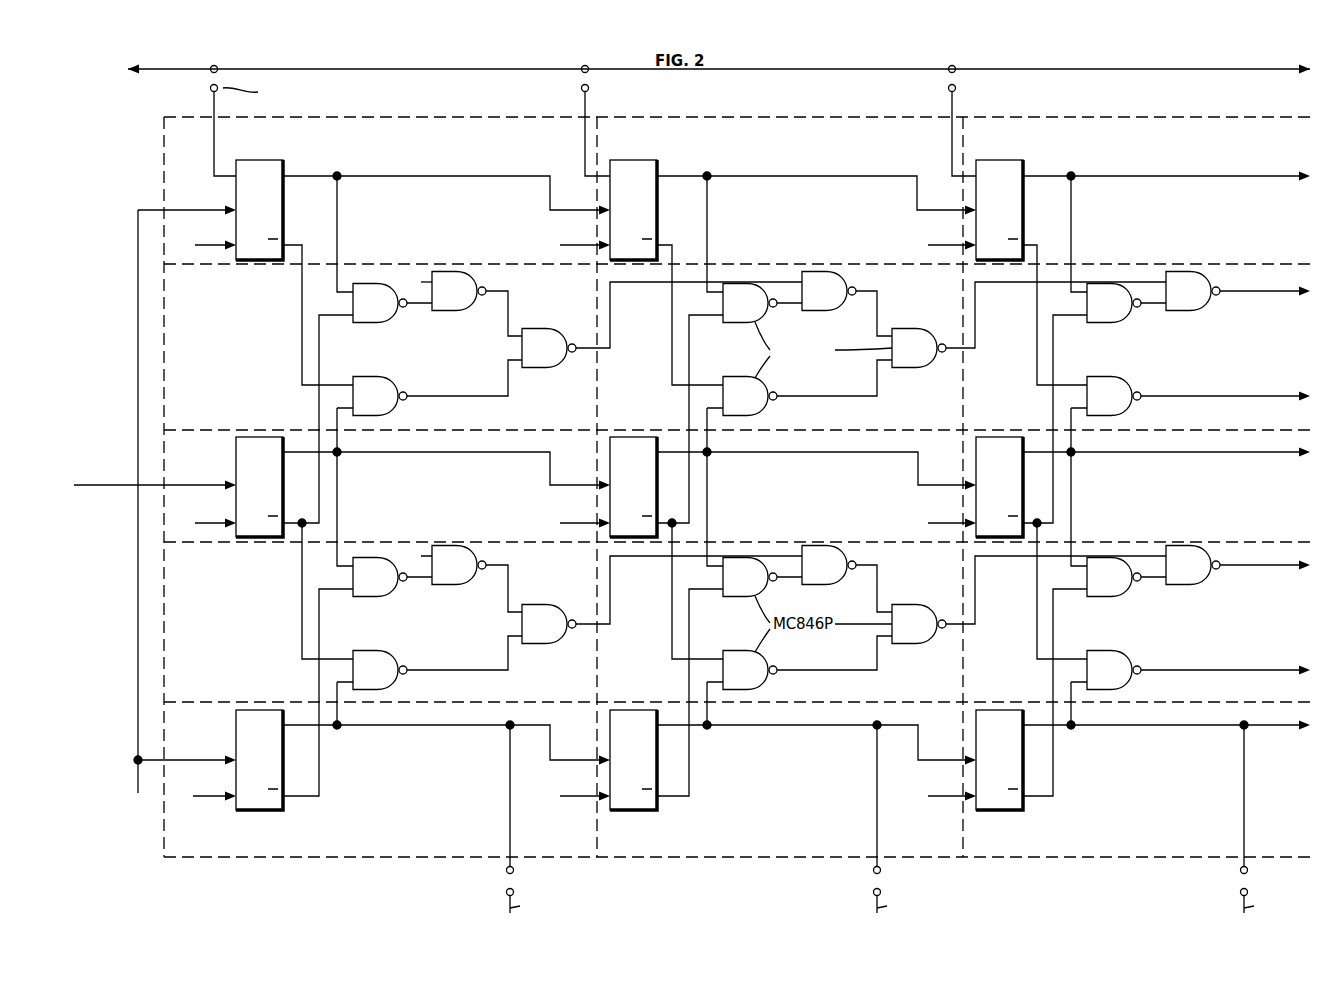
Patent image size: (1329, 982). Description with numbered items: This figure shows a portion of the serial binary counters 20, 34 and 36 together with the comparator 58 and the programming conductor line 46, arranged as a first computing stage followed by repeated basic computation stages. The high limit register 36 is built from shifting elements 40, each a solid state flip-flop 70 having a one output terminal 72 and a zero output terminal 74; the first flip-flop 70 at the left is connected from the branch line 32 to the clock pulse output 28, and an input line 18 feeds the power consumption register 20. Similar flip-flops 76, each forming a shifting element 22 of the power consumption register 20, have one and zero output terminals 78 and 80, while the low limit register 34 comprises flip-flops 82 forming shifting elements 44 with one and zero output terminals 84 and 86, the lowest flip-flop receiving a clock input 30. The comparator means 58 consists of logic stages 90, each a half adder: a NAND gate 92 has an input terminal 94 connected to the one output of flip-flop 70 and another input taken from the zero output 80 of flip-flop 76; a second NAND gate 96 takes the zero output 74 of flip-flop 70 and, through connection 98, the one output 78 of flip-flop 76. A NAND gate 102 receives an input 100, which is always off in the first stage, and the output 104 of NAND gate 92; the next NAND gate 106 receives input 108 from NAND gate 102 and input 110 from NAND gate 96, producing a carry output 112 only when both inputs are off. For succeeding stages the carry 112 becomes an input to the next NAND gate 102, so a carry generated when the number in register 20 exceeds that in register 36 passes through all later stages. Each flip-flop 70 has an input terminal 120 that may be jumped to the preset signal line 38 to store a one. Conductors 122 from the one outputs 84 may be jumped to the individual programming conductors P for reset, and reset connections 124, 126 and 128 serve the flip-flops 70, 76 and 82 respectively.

The input line 18 is at (95, 483).
The serial binary counter 20 is at (156, 510).
The shifting element 22 is at (212, 432).
The clock pulse output 28 is at (138, 785).
The T input line 30 is at (210, 758).
The branch line 32 is at (195, 212).
The low limit register 34 is at (156, 820).
The high limit register 36 is at (156, 172).
The preset signal line 38 is at (176, 76).
The shifting element 40 is at (452, 124).
The shifting element 44 is at (363, 858).
The programming conductor line 46 is at (156, 612).
The comparator means 58 is at (156, 351).
The flip-flop 70 is at (279, 160).
The one output terminal 72 is at (310, 176).
The zero output terminal 74 is at (297, 257).
The flip-flop 76 is at (259, 437).
The one output terminal 78 is at (297, 454).
The zero output terminal 80 is at (319, 522).
The flip-flop 82 is at (262, 812).
The one output terminal 84 is at (297, 712).
The zero output terminal 86 is at (315, 798).
The logic stage 90 is at (831, 326).
The NAND gate 92 is at (388, 282).
The input terminal 94 is at (337, 262).
The second NAND gate 96 is at (385, 382).
The connection 98 is at (337, 420).
The input 100 is at (424, 281).
The NAND gate 102 is at (458, 307).
The output 104 is at (419, 308).
The NAND gate 106 is at (546, 333).
The input 108 is at (509, 314).
The input 110 is at (482, 383).
The carry output 112 is at (592, 352).
The input terminal 120 is at (214, 145).
The conductor 122 is at (510, 793).
The reset connection 124 is at (214, 247).
The reset connection 126 is at (216, 521).
The reset connection 128 is at (222, 797).